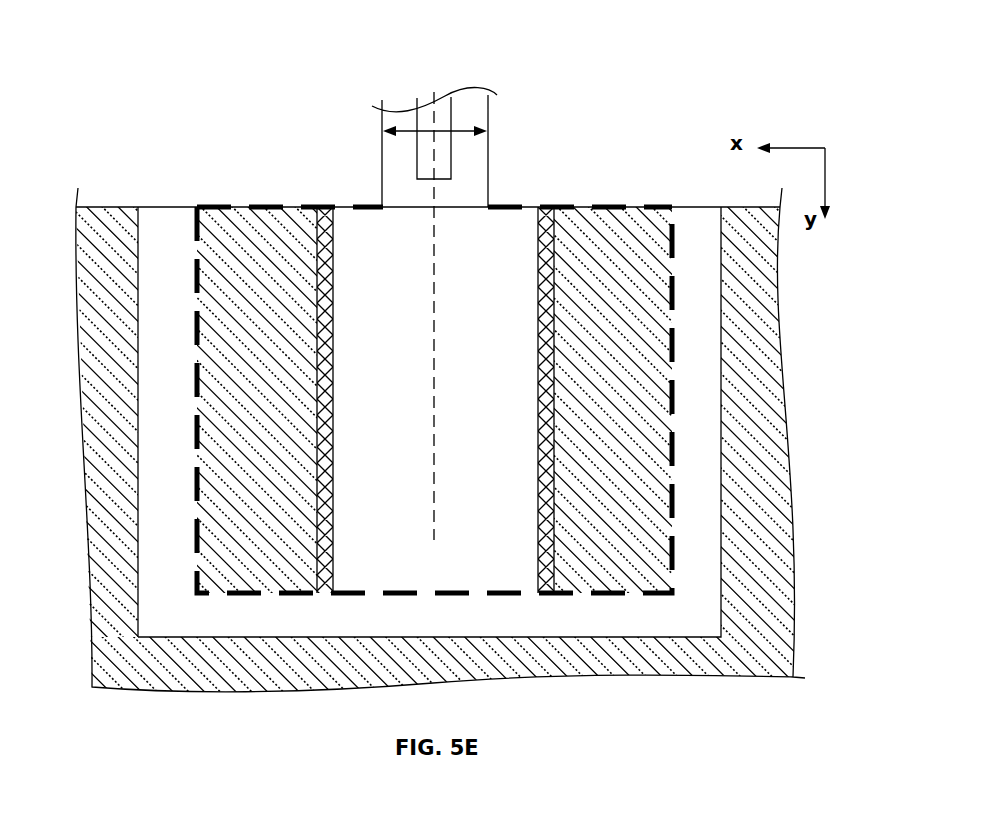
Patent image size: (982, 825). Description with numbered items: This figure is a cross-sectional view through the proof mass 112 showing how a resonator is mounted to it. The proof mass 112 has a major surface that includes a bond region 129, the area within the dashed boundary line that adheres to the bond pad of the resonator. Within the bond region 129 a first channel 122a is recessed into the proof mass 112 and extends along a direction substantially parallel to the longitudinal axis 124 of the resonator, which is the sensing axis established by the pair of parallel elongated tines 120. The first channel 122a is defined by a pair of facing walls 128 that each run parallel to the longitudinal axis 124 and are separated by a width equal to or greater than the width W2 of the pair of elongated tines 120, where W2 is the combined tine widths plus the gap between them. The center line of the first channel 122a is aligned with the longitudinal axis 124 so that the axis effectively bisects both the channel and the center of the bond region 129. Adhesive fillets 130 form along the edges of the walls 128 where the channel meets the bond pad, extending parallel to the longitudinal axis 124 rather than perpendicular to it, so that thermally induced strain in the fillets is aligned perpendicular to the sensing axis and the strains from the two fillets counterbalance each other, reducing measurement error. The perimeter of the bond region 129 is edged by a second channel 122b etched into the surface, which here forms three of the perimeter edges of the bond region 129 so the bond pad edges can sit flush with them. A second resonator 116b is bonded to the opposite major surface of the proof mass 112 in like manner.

The proof mass 112 is at (100, 391).
The second resonator 116b is at (473, 112).
The elongated tines 120 is at (482, 148).
The first channel 122a is at (381, 214).
The second channel 122b is at (167, 212).
The longitudinal axis 124 is at (433, 366).
The facing walls 128 is at (326, 377).
The bond region 129 is at (196, 246).
The adhesive fillets 130 is at (332, 436).
The width of the pair of elongated tines W2 is at (432, 128).